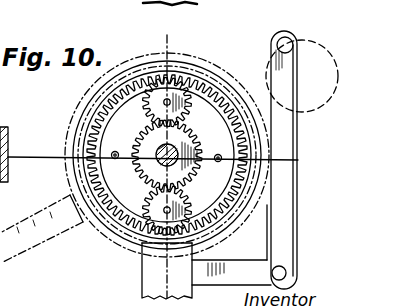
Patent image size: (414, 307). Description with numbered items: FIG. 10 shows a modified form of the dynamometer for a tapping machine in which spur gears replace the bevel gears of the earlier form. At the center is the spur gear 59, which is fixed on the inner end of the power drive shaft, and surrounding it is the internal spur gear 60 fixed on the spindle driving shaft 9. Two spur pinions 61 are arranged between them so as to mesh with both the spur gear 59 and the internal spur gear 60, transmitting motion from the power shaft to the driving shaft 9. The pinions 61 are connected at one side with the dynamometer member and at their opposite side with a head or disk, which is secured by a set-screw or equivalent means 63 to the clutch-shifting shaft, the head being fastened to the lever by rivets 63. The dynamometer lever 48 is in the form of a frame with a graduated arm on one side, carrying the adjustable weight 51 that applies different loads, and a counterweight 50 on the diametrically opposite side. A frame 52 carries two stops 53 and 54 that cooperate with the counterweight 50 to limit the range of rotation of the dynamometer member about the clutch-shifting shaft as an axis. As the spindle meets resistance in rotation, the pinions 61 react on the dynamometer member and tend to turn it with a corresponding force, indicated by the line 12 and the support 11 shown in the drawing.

The driving shaft 9 is at (152, 23).
The housing / support 11 is at (202, 33).
The axis center line 12 is at (164, 166).
The dynamometer lever 48 is at (9, 131).
The counterweight 50 is at (302, 76).
The weight 51 is at (41, 248).
The frame 52 is at (284, 208).
The stop 53 is at (288, 42).
The stop 54 is at (284, 271).
The spur gear 59 is at (143, 143).
The internal spur gear 60 is at (97, 102).
The spur pinion 61 is at (146, 107).
The set-screw 63 is at (115, 159).